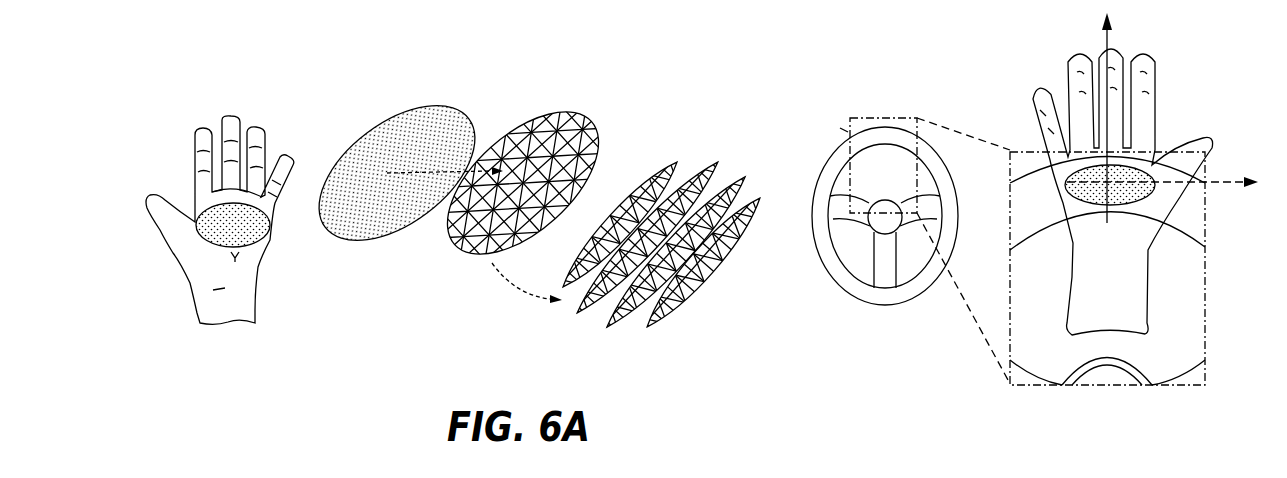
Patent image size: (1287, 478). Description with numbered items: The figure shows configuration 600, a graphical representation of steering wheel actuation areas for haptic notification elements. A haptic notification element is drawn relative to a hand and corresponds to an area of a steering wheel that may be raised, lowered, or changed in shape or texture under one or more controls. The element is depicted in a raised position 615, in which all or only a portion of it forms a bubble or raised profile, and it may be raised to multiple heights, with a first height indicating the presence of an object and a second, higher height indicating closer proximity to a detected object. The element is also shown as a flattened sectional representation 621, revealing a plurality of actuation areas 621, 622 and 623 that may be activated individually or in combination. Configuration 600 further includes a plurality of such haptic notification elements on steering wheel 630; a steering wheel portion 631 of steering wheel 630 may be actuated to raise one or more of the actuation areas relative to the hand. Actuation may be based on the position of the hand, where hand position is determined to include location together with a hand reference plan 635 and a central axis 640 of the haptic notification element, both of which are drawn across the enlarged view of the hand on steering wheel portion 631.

The configuration 600 is at (125, 120).
The raised position 615 is at (557, 112).
The actuation area 621 is at (612, 320).
The actuation area 622 is at (692, 297).
The actuation area 623 is at (628, 322).
The steering wheel 630 is at (882, 132).
The steering wheel portion 631 is at (902, 115).
The hand reference plan 635 is at (1097, 60).
The central axis 640 is at (1226, 176).